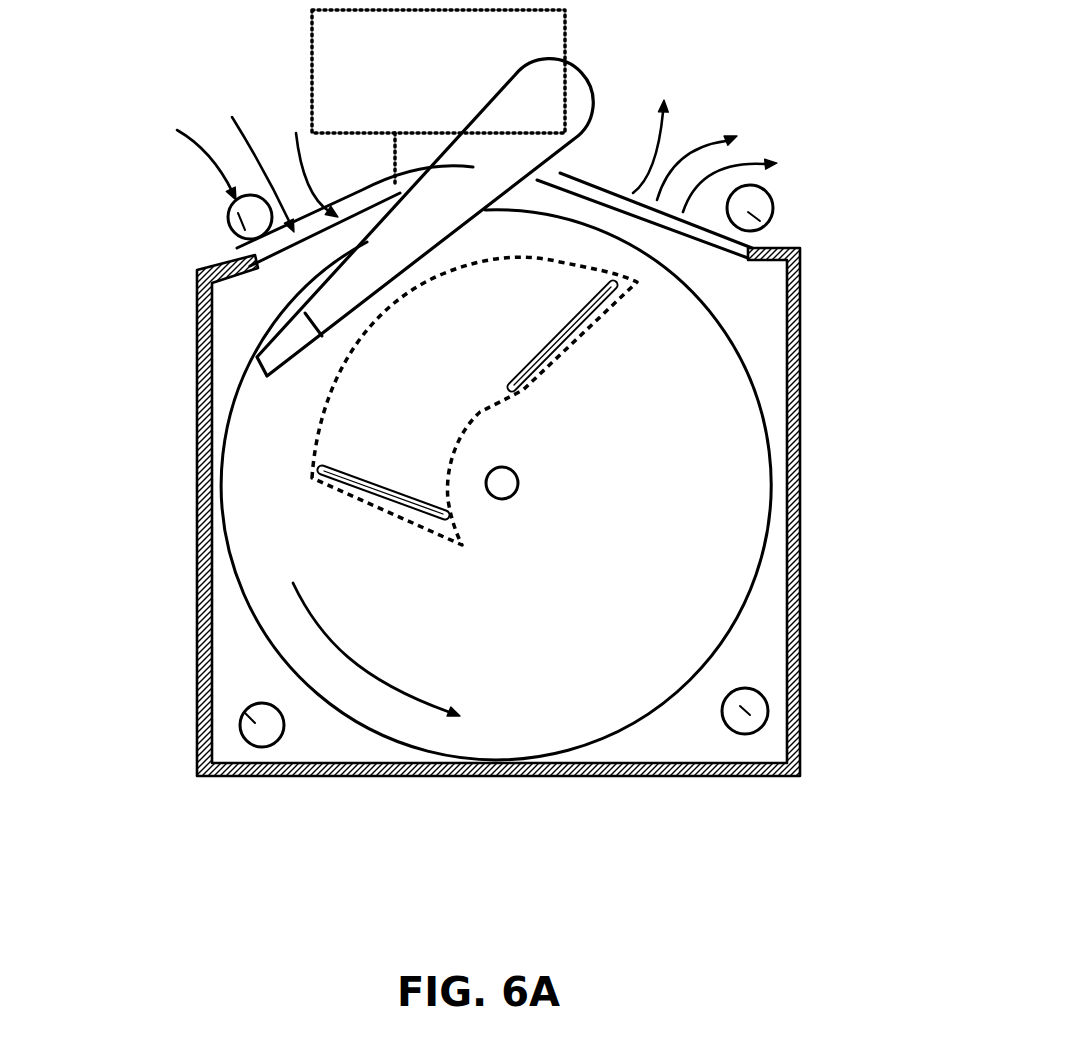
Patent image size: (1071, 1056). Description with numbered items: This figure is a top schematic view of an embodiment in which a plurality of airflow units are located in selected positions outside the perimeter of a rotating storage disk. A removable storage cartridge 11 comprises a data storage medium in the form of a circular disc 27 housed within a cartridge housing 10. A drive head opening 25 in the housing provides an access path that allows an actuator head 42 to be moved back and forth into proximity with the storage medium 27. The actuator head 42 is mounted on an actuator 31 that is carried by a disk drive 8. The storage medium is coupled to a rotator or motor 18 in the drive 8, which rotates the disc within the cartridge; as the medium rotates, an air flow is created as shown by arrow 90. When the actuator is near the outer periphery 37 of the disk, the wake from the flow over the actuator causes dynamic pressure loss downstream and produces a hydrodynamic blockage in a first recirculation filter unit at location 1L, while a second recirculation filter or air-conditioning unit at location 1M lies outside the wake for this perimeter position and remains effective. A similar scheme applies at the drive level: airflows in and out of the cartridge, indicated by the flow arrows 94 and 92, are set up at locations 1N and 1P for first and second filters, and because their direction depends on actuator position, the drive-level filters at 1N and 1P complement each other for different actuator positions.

The disk drive 8 is at (337, 75).
The cartridge housing 10 is at (750, 647).
The removable storage cartridge 11 is at (816, 577).
The rotator or motor 18 is at (417, 156).
The drive head opening 25 is at (263, 337).
The circular disc 27 is at (742, 483).
The actuator 31 is at (557, 72).
The outer periphery 37 is at (247, 410).
The actuator head 42 is at (197, 347).
The air flow arrow 90 is at (333, 637).
The outlet air flow 92 is at (686, 120).
The inlet air flow 94 is at (214, 140).
The first recirculation filter unit location 1L is at (240, 712).
The second recirculation filter or air-conditioning unit location 1M is at (762, 698).
The first filter location 1N is at (230, 217).
The second filter location 1P is at (770, 215).